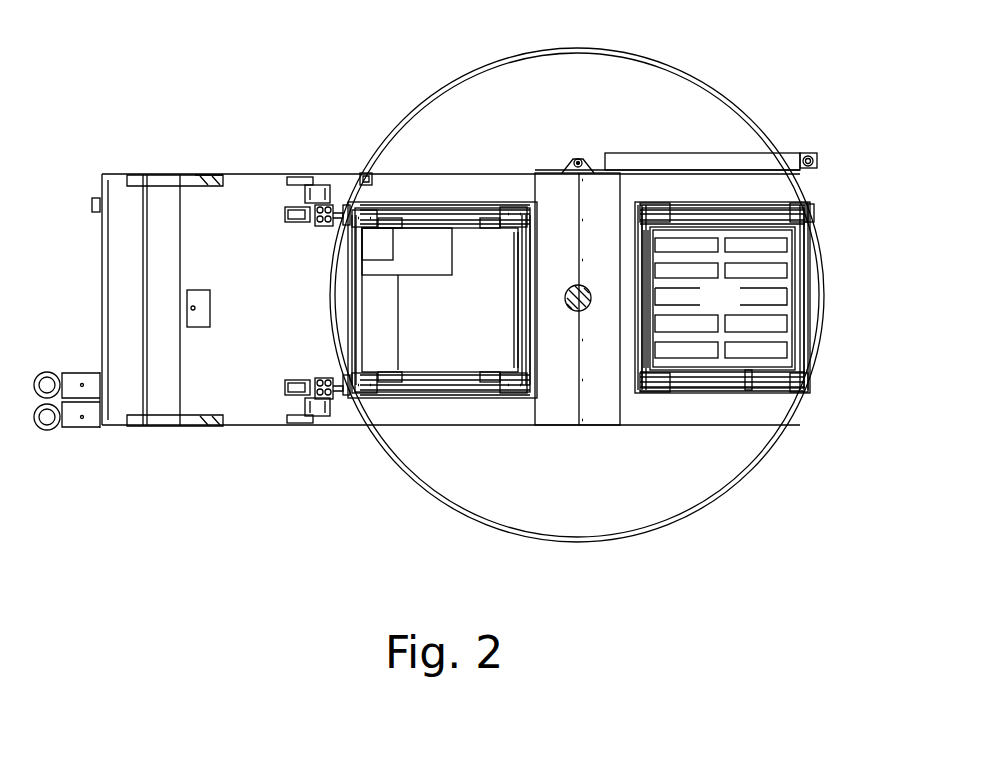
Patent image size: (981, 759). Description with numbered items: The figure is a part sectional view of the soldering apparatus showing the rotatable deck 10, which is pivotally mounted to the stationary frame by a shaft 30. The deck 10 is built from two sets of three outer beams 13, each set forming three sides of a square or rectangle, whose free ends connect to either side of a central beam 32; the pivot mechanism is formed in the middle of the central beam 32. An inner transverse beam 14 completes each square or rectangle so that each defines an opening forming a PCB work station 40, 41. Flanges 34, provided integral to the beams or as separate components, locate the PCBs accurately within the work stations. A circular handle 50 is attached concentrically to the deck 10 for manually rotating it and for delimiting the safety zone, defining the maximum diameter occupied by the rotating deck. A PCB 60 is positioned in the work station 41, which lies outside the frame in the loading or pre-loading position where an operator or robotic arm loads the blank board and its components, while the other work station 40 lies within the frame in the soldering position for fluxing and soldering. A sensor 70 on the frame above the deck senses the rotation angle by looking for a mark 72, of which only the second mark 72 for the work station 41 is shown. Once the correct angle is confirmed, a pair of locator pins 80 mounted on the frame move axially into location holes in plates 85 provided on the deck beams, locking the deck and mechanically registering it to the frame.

The rotatable deck 10 is at (522, 442).
The outer beam 13 is at (349, 305).
The inner transverse beam 14 is at (530, 300).
The shaft 30 is at (575, 289).
The central beam 32 is at (548, 183).
The flange 34 is at (503, 214).
The work station 40 is at (478, 359).
The work station 41 is at (738, 304).
The circular handle 50 is at (702, 80).
The PCB 60 is at (780, 347).
The sensor 70 is at (367, 176).
The mark 72 is at (798, 433).
The locator pin 80 is at (333, 220).
The plate 85 is at (343, 200).